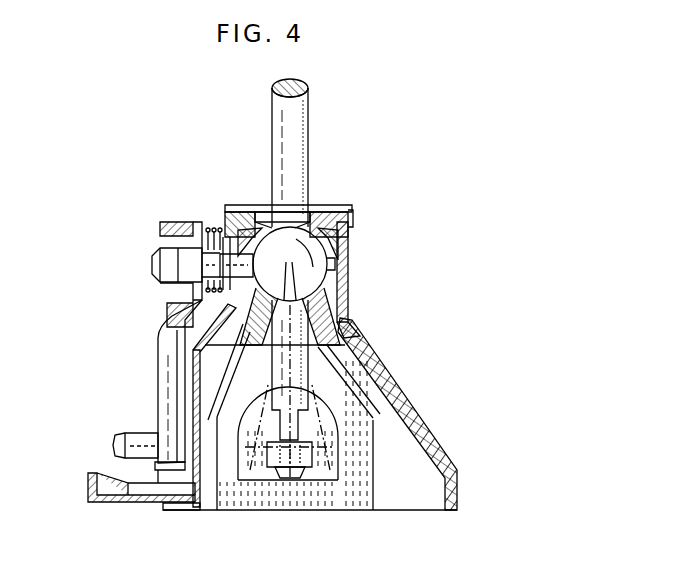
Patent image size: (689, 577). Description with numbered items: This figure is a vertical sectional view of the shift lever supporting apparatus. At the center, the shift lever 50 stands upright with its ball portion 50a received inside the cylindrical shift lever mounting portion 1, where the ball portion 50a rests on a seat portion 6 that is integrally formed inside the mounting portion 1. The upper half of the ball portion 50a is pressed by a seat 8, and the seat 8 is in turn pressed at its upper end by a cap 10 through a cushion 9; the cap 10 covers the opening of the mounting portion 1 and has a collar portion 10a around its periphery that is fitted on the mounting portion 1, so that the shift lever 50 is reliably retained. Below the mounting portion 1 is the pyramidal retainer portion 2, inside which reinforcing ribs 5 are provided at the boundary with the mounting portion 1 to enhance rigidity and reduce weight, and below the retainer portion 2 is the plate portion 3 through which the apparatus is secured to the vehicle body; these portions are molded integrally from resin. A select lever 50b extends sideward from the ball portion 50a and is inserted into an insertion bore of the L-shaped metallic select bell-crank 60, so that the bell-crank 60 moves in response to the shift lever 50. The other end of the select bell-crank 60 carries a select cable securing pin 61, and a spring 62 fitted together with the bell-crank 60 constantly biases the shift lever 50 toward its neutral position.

The shift lever mounting portion 1 is at (350, 266).
The retainer portion 2 is at (410, 404).
The plate portion 3 is at (135, 502).
The reinforcing ribs 5 is at (250, 330).
The seat portion 6 is at (275, 322).
The seat 8 is at (350, 240).
The cushion 9 is at (235, 224).
The cap 10 is at (317, 207).
The collar portion 10a is at (350, 223).
The shift lever 50 is at (310, 104).
The ball portion 50a is at (272, 220).
The select lever 50b is at (212, 230).
The select bell-crank 60 is at (160, 354).
The select cable securing pin 61 is at (130, 440).
The spring 62 is at (189, 240).